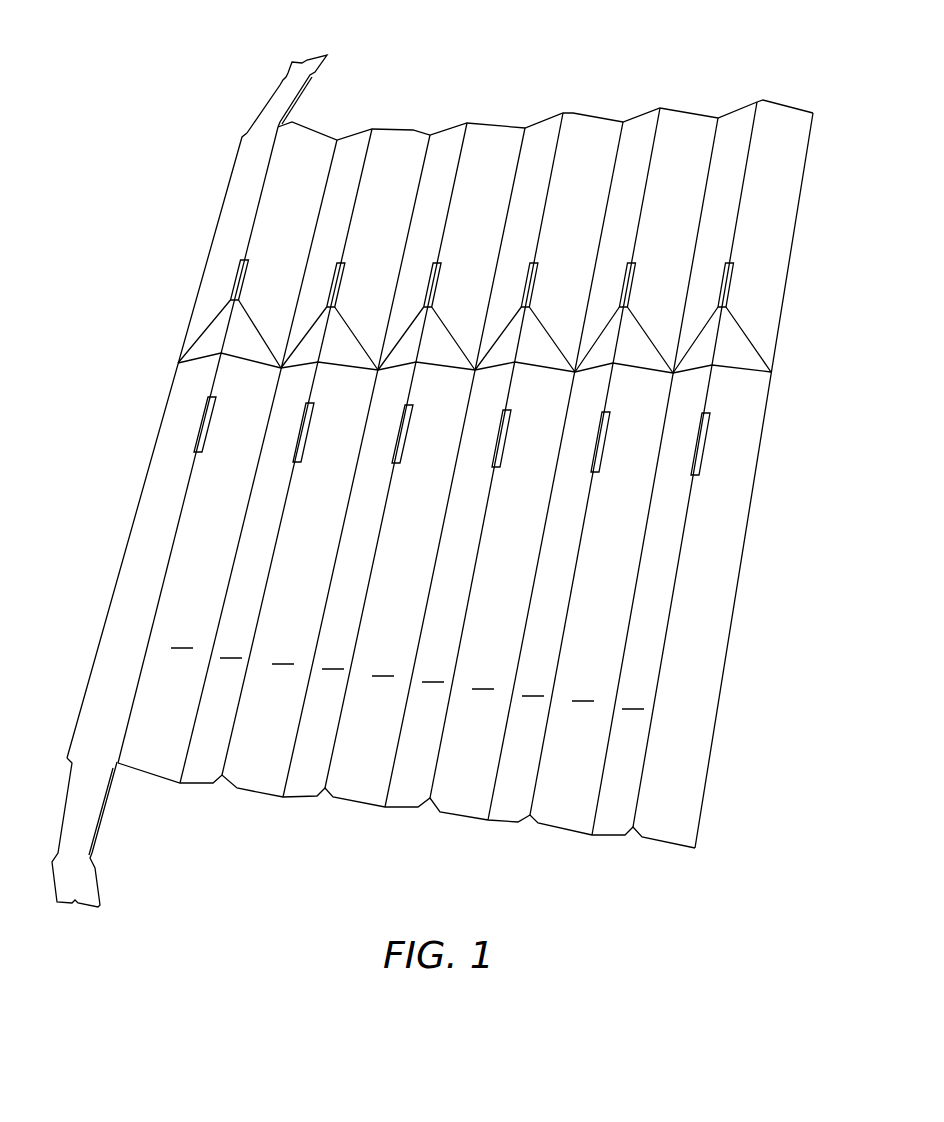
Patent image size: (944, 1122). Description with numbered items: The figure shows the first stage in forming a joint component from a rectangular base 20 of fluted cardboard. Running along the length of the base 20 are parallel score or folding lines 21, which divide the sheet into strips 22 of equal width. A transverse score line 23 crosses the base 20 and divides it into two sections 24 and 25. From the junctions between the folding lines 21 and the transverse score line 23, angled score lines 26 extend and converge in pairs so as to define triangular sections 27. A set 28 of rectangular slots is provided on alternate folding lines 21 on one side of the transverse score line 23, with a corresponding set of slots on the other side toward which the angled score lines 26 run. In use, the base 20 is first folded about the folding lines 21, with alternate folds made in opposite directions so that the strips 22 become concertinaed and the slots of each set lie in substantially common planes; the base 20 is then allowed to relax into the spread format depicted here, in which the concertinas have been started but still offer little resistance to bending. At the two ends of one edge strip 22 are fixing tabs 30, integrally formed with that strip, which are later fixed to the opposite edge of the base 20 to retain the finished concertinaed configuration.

The base 20 is at (566, 889).
The score or folding lines 21 is at (570, 590).
The strips 22 is at (408, 669).
The transverse score line 23 is at (752, 373).
The section 24 is at (358, 799).
The section 25 is at (596, 122).
The angled score lines 26 is at (742, 323).
The triangular sections 27 is at (546, 358).
The set of rectangular slots 28 is at (296, 462).
The fixing tabs 30 is at (288, 73).